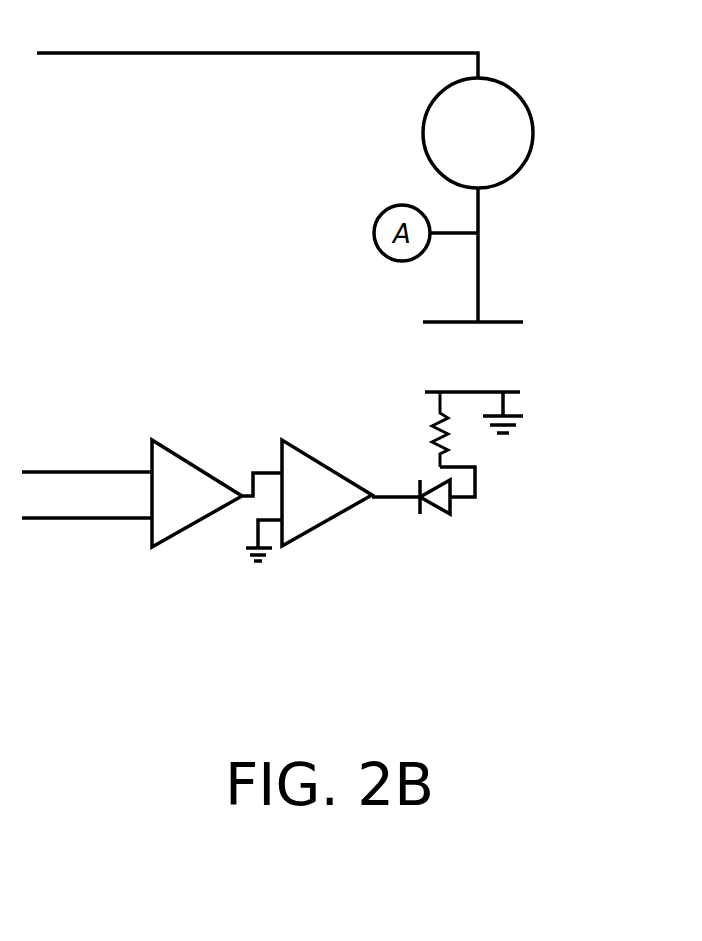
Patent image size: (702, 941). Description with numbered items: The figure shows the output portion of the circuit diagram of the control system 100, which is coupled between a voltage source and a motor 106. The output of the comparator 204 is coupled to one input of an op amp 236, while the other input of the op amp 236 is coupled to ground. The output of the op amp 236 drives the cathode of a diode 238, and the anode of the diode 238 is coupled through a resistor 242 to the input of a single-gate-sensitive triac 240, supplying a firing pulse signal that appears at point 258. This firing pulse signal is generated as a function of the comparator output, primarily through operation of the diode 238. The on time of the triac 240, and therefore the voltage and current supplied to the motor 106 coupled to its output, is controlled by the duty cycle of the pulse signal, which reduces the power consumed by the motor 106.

The motor 106 is at (533, 131).
The single-gate-sensitive triac 240 is at (515, 303).
The point 258 is at (438, 403).
The resistor 242 is at (435, 438).
The diode 238 is at (437, 510).
The comparator 204 is at (213, 483).
The op amp 236 is at (308, 468).
The control system 100 is at (324, 524).